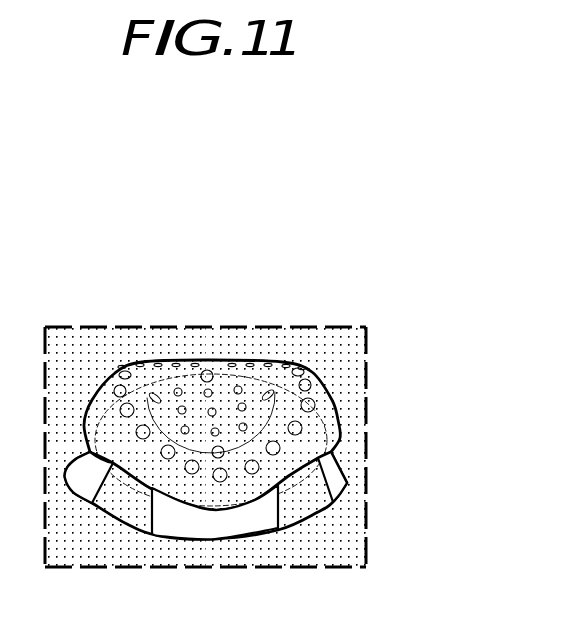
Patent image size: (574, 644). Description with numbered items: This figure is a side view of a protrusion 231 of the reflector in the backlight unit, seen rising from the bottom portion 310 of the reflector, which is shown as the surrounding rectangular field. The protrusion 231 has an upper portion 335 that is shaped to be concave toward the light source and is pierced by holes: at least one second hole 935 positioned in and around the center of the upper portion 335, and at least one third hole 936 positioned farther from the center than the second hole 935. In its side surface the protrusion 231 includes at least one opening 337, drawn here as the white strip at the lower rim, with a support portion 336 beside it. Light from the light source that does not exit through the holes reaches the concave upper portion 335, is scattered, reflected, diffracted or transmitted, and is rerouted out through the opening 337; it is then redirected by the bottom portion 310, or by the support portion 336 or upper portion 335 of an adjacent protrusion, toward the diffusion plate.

The bottom portion 310 is at (63, 550).
The protrusion 231 is at (309, 355).
The second hole 935 is at (122, 362).
The third hole 936 is at (210, 375).
The upper portion 335 is at (128, 465).
The support portion 336 is at (315, 505).
The opening 337 is at (172, 533).